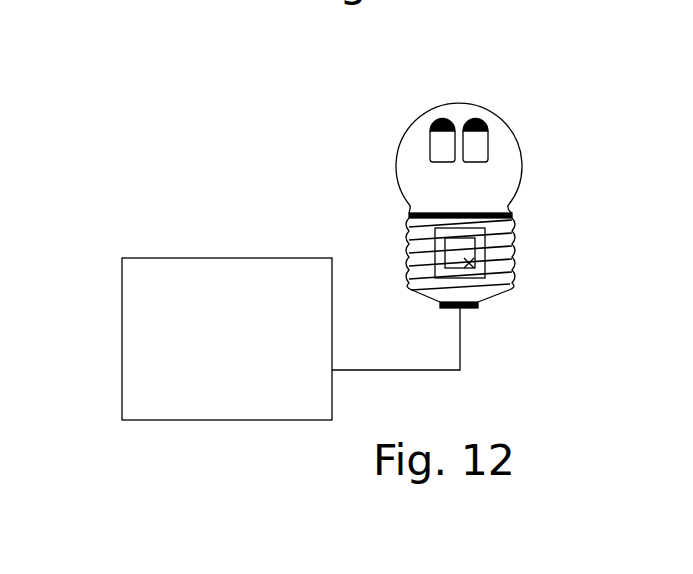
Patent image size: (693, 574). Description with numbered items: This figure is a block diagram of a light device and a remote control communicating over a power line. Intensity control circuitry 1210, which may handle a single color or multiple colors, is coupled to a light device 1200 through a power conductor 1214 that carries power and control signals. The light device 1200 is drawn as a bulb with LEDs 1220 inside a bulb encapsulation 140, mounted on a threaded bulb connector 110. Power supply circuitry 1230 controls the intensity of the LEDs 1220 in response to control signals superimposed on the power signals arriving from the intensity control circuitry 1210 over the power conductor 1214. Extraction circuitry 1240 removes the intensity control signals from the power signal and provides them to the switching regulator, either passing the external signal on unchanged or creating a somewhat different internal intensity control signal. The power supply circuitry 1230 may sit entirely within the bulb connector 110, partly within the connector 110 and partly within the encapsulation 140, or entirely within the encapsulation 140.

The light device 1200 is at (366, 117).
The LEDs 1220 is at (507, 120).
The bulb encapsulation 140 is at (458, 103).
The bulb connector 110 is at (408, 229).
The extraction circuitry 1240 is at (487, 267).
The power supply circuitry 1230 is at (513, 243).
The power conductor 1214 is at (462, 353).
The intensity control circuitry 1210 is at (250, 387).